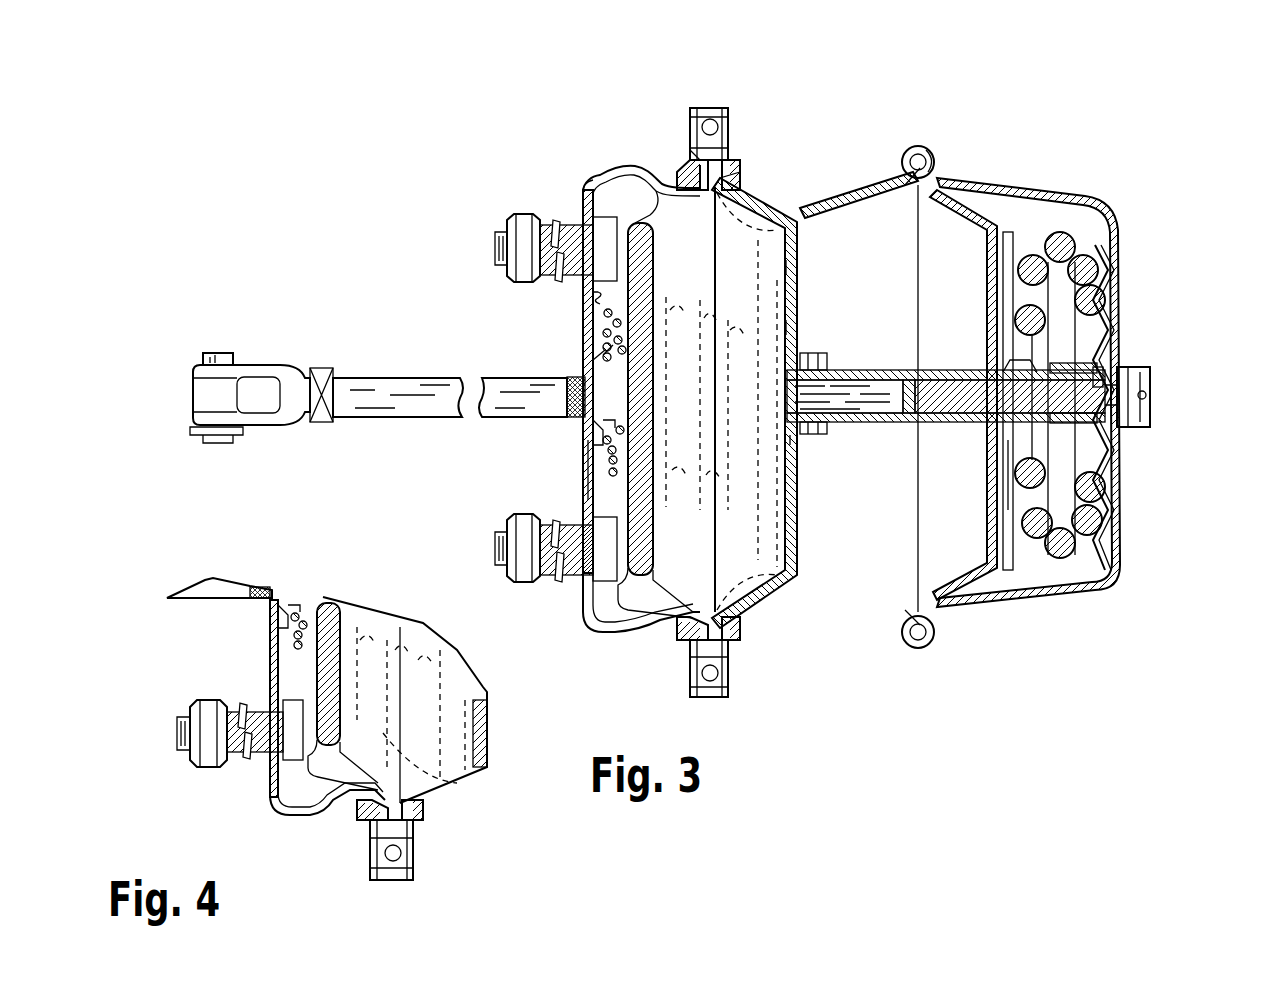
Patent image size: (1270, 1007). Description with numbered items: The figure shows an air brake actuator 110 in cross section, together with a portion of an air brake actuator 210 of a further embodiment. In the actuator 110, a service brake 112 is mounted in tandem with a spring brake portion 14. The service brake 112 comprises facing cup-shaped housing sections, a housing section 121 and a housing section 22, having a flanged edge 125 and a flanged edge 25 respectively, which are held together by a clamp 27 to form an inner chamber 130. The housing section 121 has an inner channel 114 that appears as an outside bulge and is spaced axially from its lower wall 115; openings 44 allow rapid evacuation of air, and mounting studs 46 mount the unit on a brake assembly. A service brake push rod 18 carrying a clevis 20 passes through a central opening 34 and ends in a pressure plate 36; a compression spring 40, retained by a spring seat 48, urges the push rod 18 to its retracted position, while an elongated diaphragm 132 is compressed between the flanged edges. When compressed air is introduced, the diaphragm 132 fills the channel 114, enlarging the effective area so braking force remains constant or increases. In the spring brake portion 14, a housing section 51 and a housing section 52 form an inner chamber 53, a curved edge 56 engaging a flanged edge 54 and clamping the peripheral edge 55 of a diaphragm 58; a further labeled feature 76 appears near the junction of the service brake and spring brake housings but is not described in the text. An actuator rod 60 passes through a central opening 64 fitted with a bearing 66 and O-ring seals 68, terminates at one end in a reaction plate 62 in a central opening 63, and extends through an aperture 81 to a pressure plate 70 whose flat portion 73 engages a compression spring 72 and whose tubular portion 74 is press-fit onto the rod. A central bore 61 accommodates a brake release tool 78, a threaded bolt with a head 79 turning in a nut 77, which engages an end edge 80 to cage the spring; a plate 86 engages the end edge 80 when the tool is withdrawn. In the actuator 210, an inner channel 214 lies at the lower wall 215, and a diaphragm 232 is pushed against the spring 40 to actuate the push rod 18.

In FIG. 3, the spring brake portion 14 is at (1003, 165).
In FIG. 3, the service brake push rod 18 is at (385, 398).
In FIG. 4, the service brake push rod 18 is at (223, 597).
In FIG. 3, the clevis 20 is at (268, 373).
In FIG. 3, the housing section 22 is at (745, 192).
In FIG. 3, the flanged edge 25 is at (693, 645).
In FIG. 4, the flanged edge 25 is at (378, 822).
In FIG. 3, the clamp 27 is at (693, 688).
In FIG. 4, the clamp 27 is at (373, 868).
In FIG. 3, the central opening 34 is at (583, 372).
In FIG. 3, the pressure plate 36 is at (626, 495).
In FIG. 4, the pressure plate 36 is at (483, 740).
In FIG. 3, the compression spring 40 is at (603, 313).
In FIG. 4, the compression spring 40 is at (405, 700).
In FIG. 3, the openings 44 is at (583, 205).
In FIG. 3, the mounting studs 46 is at (495, 257).
In FIG. 4, the mounting studs 46 is at (177, 727).
In FIG. 3, the spring seat 48 is at (590, 440).
In FIG. 4, the spring seat 48 is at (272, 625).
In FIG. 3, the housing section 51 is at (850, 190).
In FIG. 3, the housing section 52 is at (1087, 203).
In FIG. 3, the inner chamber 53 is at (950, 270).
In FIG. 3, the flanged edge 54 is at (913, 168).
In FIG. 3, the peripheral edge 55 is at (920, 165).
In FIG. 3, the peripheral curved edge 56 is at (923, 147).
In FIG. 3, the diaphragm 58 is at (990, 567).
In FIG. 3, the actuator rod 60 is at (837, 367).
In FIG. 3, the central bore 61 is at (843, 400).
In FIG. 3, the reaction plate 62 is at (787, 327).
In FIG. 3, the central opening 63 is at (787, 267).
In FIG. 3, the central opening 64 is at (793, 440).
In FIG. 3, the bearing 66 is at (797, 437).
In FIG. 3, the O-ring seals 68 is at (822, 357).
In FIG. 3, the pressure plate 70 is at (1013, 227).
In FIG. 3, the compression spring 72 is at (1100, 263).
In FIG. 3, the flat portion 73 is at (1007, 475).
In FIG. 3, the tubular portion 74 is at (1083, 363).
In FIG. 3, the housing flange 76 is at (785, 212).
In FIG. 3, the nut 77 is at (1120, 420).
In FIG. 3, the brake release tool 78 is at (997, 397).
In FIG. 3, the head 79 is at (1143, 410).
In FIG. 3, the end edge 80 is at (1100, 377).
In FIG. 3, the aperture 81 is at (1007, 367).
In FIG. 3, the plate 86 is at (910, 400).
In FIG. 3, the air brake actuator 110 is at (855, 75).
In FIG. 3, the service brake 112 is at (603, 165).
In FIG. 3, the inner channel 114 is at (600, 630).
In FIG. 3, the lower wall 115 is at (587, 465).
In FIG. 3, the housing section 121 is at (583, 190).
In FIG. 3, the flanged edge 125 is at (693, 152).
In FIG. 3, the inner chamber 130 is at (593, 292).
In FIG. 3, the diaphragm 132 is at (603, 598).
In FIG. 4, the air brake actuator 210 is at (180, 588).
In FIG. 4, the inner channel 214 is at (297, 808).
In FIG. 4, the lower wall 215 is at (272, 648).
In FIG. 4, the diaphragm 232 is at (290, 782).